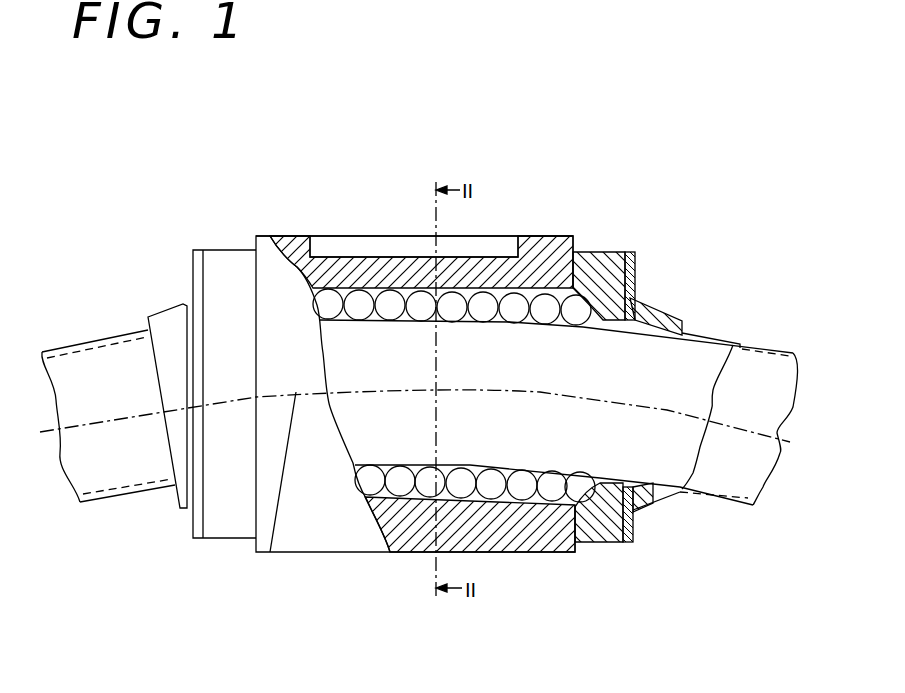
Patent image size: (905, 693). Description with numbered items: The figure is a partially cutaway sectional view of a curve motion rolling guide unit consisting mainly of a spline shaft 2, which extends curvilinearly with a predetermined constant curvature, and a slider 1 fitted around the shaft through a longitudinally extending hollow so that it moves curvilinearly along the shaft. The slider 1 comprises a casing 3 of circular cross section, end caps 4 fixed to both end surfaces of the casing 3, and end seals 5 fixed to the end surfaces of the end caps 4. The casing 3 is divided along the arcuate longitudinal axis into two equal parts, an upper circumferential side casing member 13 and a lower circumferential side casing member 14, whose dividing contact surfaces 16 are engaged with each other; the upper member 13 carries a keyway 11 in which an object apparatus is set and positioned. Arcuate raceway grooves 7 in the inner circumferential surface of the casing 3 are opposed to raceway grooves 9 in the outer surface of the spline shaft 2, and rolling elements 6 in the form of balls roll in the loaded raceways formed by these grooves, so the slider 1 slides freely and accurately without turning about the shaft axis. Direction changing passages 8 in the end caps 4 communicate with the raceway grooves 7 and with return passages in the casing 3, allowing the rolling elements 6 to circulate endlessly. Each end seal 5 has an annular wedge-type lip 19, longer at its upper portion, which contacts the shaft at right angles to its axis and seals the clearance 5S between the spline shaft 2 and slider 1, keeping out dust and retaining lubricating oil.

The slider 1 is at (585, 238).
The spline shaft 2 is at (98, 375).
The casing 3 is at (332, 275).
The end cap 4 is at (230, 292).
The end seal 5 is at (197, 272).
The clearance 5S is at (643, 308).
The rolling element 6 is at (388, 303).
The raceway groove 7 is at (520, 290).
The direction changing passage 8 is at (588, 330).
The raceway groove 9 is at (667, 490).
The keyway 11 is at (412, 253).
The upper circumferential side casing member 13 is at (487, 267).
The lower circumferential side casing member 14 is at (412, 523).
The dividing contact surface 16 is at (266, 560).
The lip 19 is at (167, 332).